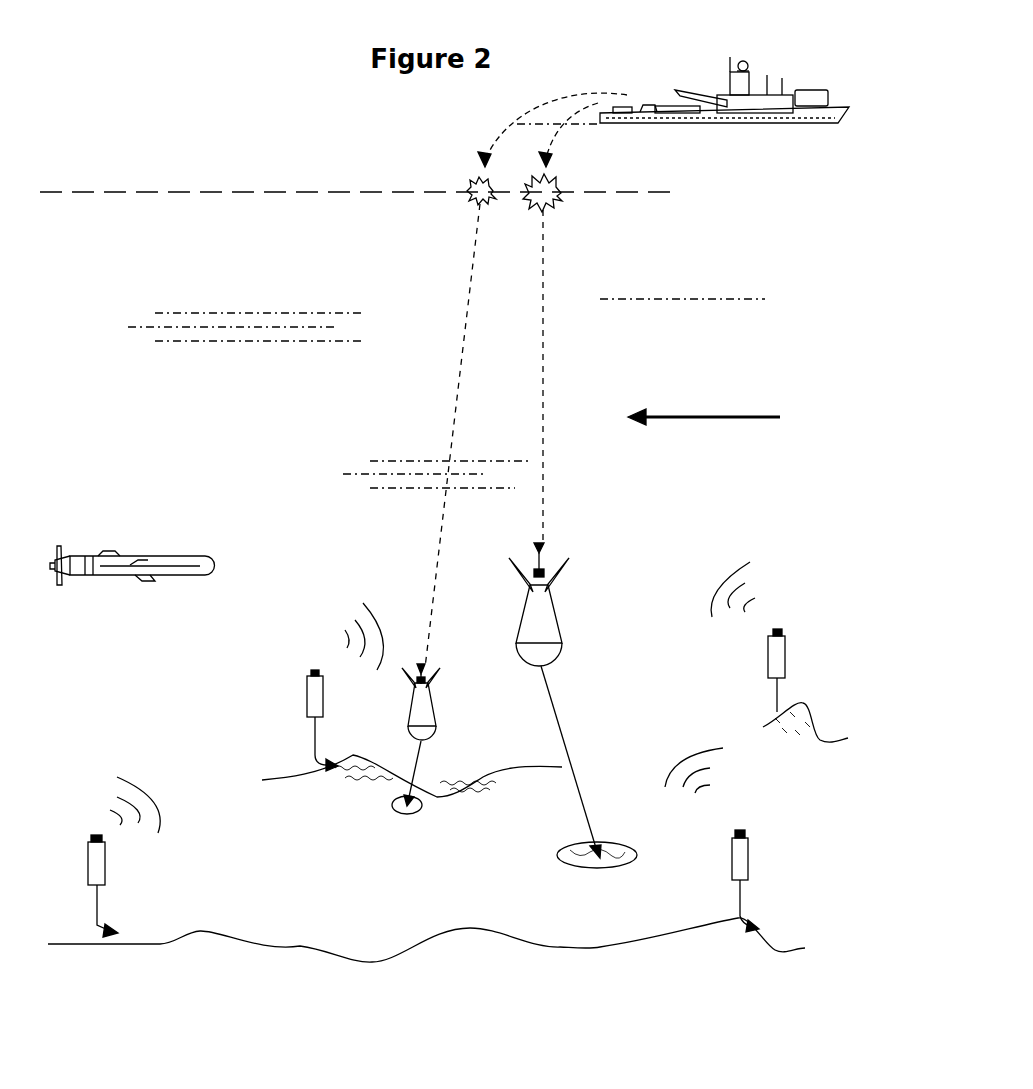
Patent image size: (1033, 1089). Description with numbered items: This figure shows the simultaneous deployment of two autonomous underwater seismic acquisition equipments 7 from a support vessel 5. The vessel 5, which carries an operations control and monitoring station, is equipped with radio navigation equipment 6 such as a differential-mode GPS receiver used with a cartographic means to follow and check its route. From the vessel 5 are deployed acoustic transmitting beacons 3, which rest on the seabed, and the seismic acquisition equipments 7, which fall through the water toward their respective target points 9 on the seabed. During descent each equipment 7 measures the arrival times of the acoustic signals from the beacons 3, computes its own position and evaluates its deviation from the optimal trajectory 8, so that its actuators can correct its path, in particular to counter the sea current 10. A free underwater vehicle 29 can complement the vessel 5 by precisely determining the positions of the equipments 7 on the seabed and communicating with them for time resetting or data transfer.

The acoustic transmitting beacons 3 is at (428, 749).
The support vessel 5 is at (754, 97).
The radio navigation equipment 6 is at (723, 51).
The seismic acquisition equipments 7 is at (506, 641).
The optimal trajectory 8 is at (526, 380).
The target point 9 is at (506, 773).
The sea current 10 is at (732, 428).
The free underwater vehicle 29 is at (132, 585).